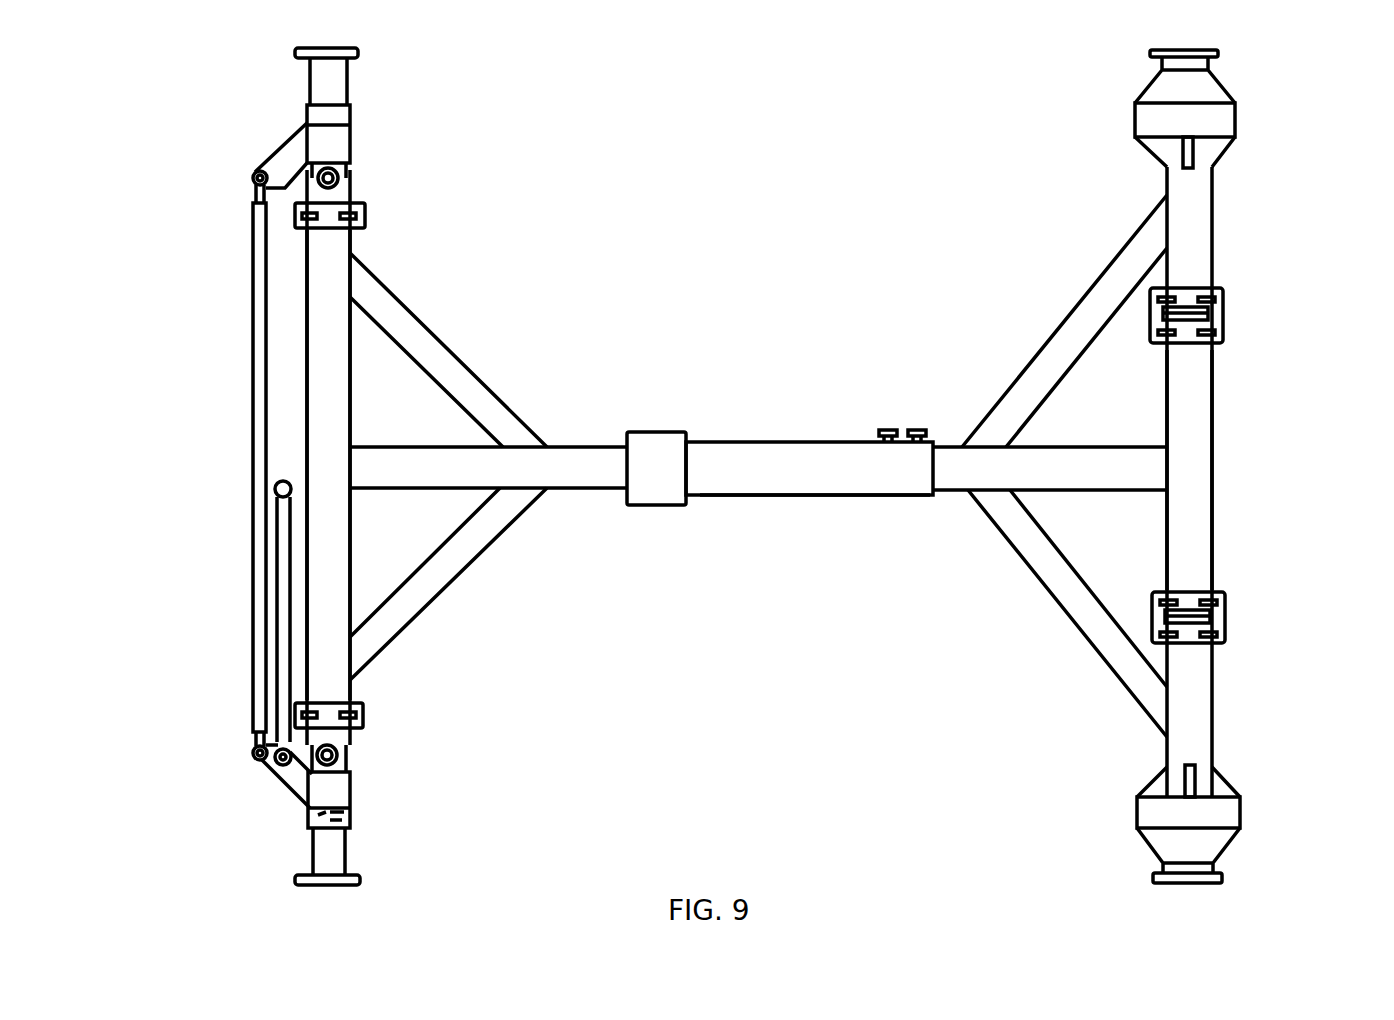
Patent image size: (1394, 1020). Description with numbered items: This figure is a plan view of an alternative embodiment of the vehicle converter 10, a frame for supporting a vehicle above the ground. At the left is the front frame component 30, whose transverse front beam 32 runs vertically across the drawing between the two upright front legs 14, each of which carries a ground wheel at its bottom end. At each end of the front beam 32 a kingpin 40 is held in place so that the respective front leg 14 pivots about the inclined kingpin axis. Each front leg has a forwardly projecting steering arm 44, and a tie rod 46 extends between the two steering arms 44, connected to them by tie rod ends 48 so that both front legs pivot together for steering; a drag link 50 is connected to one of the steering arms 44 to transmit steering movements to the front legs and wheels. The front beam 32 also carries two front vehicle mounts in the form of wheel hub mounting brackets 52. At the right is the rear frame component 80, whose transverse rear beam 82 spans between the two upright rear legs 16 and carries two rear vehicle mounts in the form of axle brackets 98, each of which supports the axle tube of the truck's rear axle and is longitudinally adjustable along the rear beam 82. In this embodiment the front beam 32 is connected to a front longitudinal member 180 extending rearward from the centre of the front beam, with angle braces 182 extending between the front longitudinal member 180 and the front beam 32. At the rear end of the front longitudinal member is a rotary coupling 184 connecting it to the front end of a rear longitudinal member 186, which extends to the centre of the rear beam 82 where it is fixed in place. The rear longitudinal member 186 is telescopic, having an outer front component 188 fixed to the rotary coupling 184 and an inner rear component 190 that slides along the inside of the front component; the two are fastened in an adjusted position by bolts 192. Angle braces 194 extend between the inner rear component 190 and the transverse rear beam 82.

The vehicle converter 10 is at (1280, 210).
The upright front leg 14 is at (335, 120).
The upright rear leg 16 is at (1228, 122).
The front frame component 30 is at (303, 370).
The transverse front beam 32 is at (330, 409).
The kingpin 40 is at (342, 173).
The steering arm 44 is at (266, 150).
The tie rod 46 is at (250, 430).
The tie rod end 48 is at (250, 180).
The drag link 50 is at (275, 540).
The wheel hub mounting bracket 52 is at (368, 216).
The rear frame component 80 is at (1215, 418).
The transverse rear beam 82 is at (1190, 495).
The axle bracket 98 is at (1228, 312).
The front longitudinal member 180 is at (573, 442).
The angle brace 182 is at (414, 308).
The rotary coupling 184 is at (660, 485).
The rear longitudinal member 186 is at (878, 500).
The outer front component 188 is at (747, 458).
The inner rear component 190 is at (1060, 466).
The bolt 192 is at (886, 428).
The angle brace 194 is at (1072, 300).